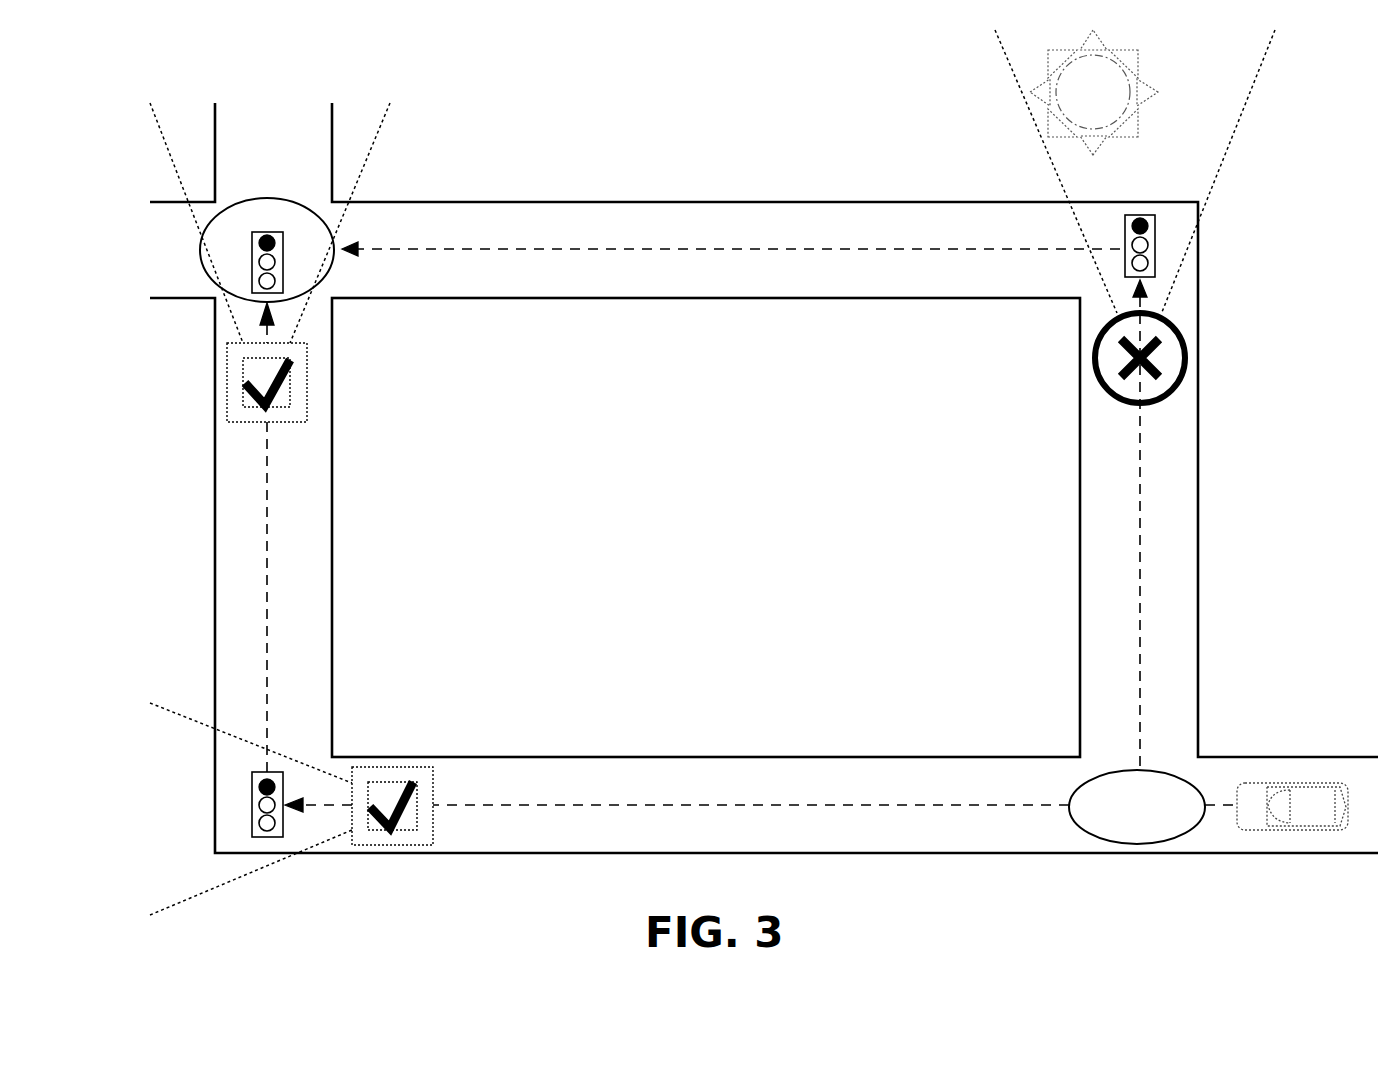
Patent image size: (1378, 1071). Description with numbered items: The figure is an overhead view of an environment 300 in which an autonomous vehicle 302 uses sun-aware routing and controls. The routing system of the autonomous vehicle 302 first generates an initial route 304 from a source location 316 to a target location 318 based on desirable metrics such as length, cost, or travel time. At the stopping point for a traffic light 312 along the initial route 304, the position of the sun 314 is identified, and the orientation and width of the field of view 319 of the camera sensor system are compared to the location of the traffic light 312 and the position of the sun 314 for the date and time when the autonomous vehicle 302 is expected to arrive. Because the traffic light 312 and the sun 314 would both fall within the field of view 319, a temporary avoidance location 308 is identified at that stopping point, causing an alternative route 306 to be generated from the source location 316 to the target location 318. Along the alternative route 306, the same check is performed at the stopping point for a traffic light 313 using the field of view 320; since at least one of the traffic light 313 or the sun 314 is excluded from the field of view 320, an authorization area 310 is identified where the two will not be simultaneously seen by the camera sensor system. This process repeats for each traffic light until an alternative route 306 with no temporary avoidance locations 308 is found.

The environment 300 is at (652, 103).
The autonomous vehicle 302 is at (1305, 783).
The initial route 304 is at (775, 248).
The alternative route 306 is at (742, 805).
The temporary avoidance location 308 is at (1185, 345).
The authorization area 310 is at (307, 375).
The traffic light 312 is at (1133, 214).
The traffic light 313 is at (252, 805).
The sun 314 is at (1135, 62).
The source location 316 is at (1080, 792).
The target location 318 is at (245, 200).
The field of view 319 is at (1232, 138).
The field of view 320 is at (302, 762).